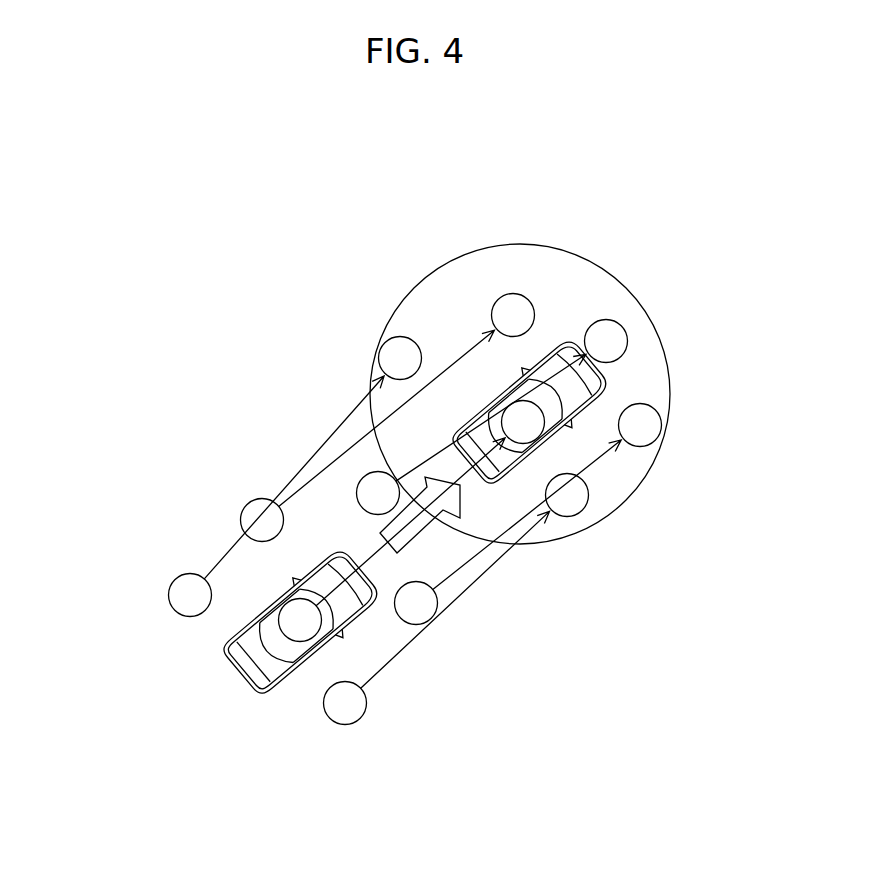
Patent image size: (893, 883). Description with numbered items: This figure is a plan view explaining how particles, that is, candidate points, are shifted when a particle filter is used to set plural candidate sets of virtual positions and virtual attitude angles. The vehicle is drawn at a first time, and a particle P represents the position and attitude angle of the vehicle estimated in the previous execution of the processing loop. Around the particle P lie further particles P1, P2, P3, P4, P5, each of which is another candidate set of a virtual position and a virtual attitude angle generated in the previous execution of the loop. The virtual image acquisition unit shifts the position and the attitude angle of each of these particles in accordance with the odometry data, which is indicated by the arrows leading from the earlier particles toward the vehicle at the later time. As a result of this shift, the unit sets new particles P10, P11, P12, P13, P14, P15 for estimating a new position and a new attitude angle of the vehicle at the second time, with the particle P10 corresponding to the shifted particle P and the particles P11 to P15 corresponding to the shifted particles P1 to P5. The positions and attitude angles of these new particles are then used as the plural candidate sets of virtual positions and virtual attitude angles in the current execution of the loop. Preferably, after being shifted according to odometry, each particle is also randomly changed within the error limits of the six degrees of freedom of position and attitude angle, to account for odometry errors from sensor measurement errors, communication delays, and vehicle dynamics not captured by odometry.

The particle P is at (285, 627).
The particle P1 is at (180, 595).
The particle P2 is at (252, 510).
The particle P3 is at (368, 483).
The particle P4 is at (426, 607).
The particle P5 is at (352, 705).
The particle P10 is at (520, 440).
The particle P11 is at (388, 347).
The particle P12 is at (507, 302).
The particle P13 is at (617, 338).
The particle P14 is at (650, 430).
The particle P15 is at (580, 500).